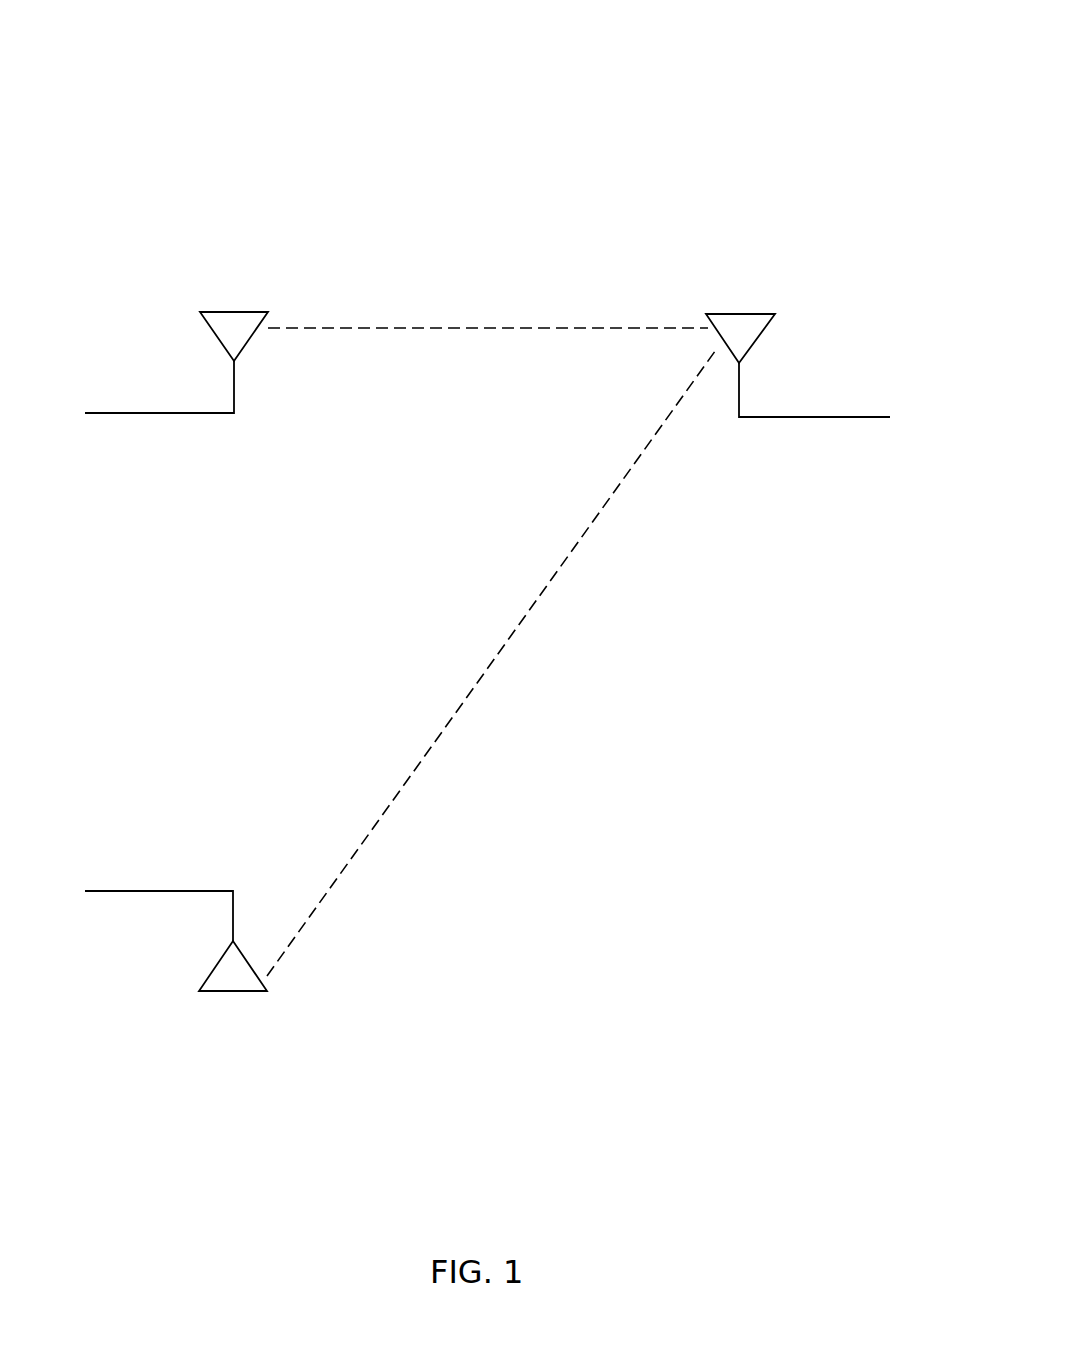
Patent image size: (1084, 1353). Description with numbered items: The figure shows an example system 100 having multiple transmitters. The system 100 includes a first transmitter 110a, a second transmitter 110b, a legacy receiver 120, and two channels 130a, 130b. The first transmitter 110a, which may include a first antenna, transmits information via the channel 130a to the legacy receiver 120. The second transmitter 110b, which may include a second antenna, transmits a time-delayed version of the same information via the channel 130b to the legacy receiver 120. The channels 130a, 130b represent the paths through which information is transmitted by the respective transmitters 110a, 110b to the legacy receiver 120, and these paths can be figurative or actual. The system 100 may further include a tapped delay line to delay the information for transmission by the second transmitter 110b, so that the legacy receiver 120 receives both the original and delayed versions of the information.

The system 100 is at (641, 55).
The first transmitter 110a is at (246, 312).
The second transmitter 110b is at (243, 991).
The legacy receiver 120 is at (750, 314).
The channel 130a is at (452, 328).
The channel 130b is at (497, 652).